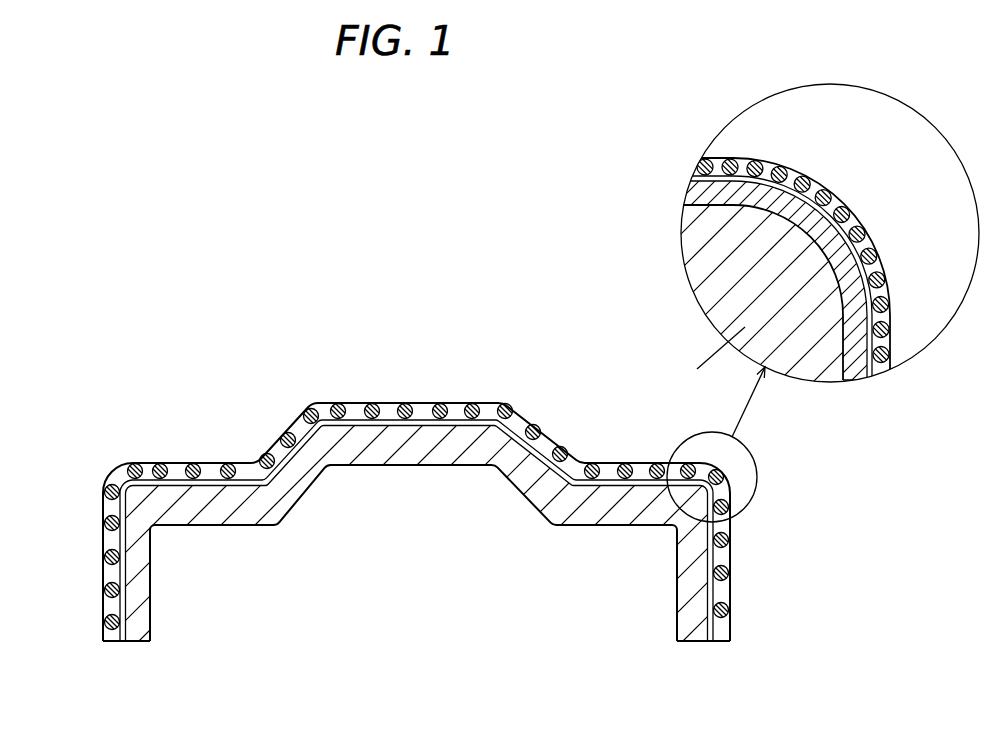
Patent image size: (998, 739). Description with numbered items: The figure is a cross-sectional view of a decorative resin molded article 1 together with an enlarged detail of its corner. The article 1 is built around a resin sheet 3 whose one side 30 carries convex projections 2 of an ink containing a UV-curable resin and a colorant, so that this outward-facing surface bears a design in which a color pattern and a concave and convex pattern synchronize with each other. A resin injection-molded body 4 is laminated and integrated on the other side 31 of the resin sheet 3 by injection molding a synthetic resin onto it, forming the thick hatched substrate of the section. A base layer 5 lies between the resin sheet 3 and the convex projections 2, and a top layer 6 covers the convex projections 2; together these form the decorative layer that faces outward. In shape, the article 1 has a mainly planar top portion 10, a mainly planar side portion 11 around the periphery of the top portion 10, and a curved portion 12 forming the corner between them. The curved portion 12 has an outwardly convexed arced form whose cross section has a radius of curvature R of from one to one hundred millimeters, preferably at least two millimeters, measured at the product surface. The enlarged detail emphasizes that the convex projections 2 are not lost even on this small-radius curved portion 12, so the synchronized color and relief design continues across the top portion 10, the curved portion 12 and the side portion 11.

The decorative resin molded article 1 is at (396, 291).
The convex projections 2 is at (517, 405).
The resin sheet 3 is at (352, 410).
The resin injection-molded body 4 is at (283, 505).
The base layer 5 is at (874, 377).
The top layer 6 is at (836, 190).
The top portion 10 is at (472, 400).
The side portion 11 is at (737, 600).
The curved portion 12 is at (733, 472).
The one side of the resin sheet 30 is at (773, 160).
The other side of the resin sheet 31 is at (745, 207).
The radius of curvature R is at (709, 360).